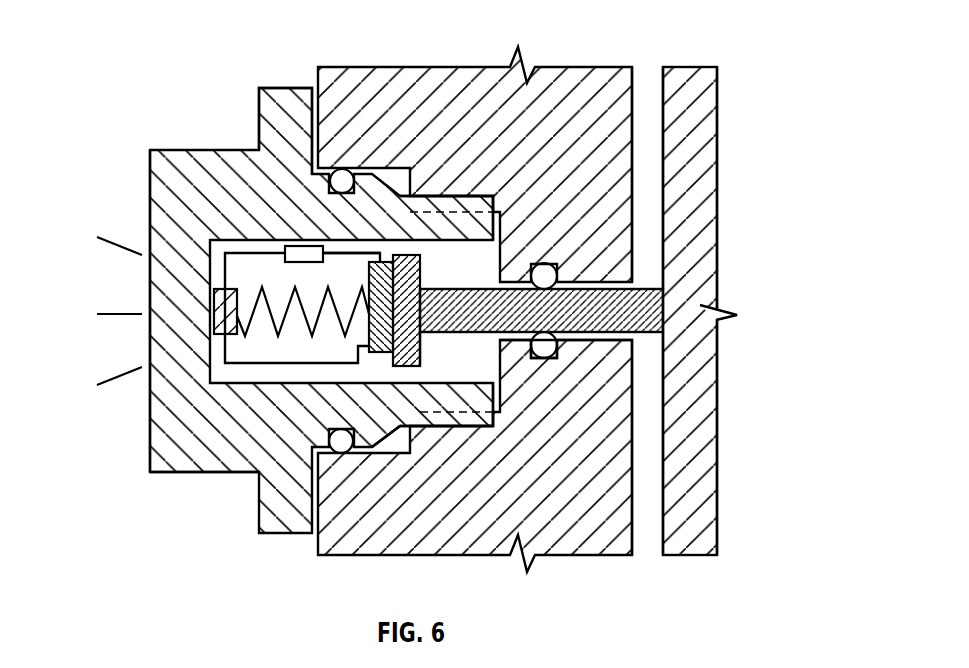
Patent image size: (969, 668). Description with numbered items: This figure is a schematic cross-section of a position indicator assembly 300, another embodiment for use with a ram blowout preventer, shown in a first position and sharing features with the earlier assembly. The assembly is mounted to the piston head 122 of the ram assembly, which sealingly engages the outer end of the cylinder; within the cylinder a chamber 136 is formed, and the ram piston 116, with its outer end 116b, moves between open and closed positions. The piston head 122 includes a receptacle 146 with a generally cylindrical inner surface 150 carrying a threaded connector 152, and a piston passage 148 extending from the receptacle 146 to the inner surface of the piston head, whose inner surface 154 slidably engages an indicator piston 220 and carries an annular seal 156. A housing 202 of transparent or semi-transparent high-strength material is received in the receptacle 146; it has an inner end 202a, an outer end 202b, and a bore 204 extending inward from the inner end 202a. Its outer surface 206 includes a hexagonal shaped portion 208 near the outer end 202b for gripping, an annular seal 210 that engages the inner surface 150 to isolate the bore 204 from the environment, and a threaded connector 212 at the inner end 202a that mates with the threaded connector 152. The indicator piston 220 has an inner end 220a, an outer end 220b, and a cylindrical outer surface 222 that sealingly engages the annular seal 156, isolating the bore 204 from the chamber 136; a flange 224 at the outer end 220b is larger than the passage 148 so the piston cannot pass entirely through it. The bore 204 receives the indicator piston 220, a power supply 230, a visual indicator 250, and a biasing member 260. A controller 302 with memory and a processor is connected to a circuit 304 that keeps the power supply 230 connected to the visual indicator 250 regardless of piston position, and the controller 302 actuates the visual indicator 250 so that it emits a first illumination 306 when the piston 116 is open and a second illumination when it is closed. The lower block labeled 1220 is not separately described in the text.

The position indicator assembly 300 is at (133, 71).
The housing 202 is at (145, 437).
The inner end 202a is at (495, 200).
The outer end 202b is at (149, 172).
The bore 204 is at (248, 372).
The outer surface 206 is at (275, 88).
The hexagonal shaped portion 208 is at (171, 478).
The annular seal 210 is at (341, 171).
The threaded connector 212 is at (435, 413).
The piston head 122 is at (588, 82).
The chamber 136 is at (638, 135).
The outer surface 222 is at (717, 197).
The piston 116 is at (710, 233).
The outer end 116b is at (663, 378).
The indicator piston 220 is at (610, 285).
The inner end 220a is at (703, 302).
The outer end 220b is at (422, 346).
The flange 224 is at (410, 368).
The power supply 230 is at (368, 356).
The visual indicator 250 is at (214, 306).
The biasing member 260 is at (257, 275).
The controller 302 is at (297, 247).
The circuit 304 is at (343, 246).
The first illumination 306 is at (120, 248).
The receptacle 146 is at (387, 447).
The piston passage 148 is at (568, 352).
The inner surface 150 is at (338, 455).
The threaded connector 152 is at (492, 414).
The inner surface 154 is at (626, 350).
The annular seal 156 is at (532, 348).
The lower manifold block 1220 is at (318, 540).